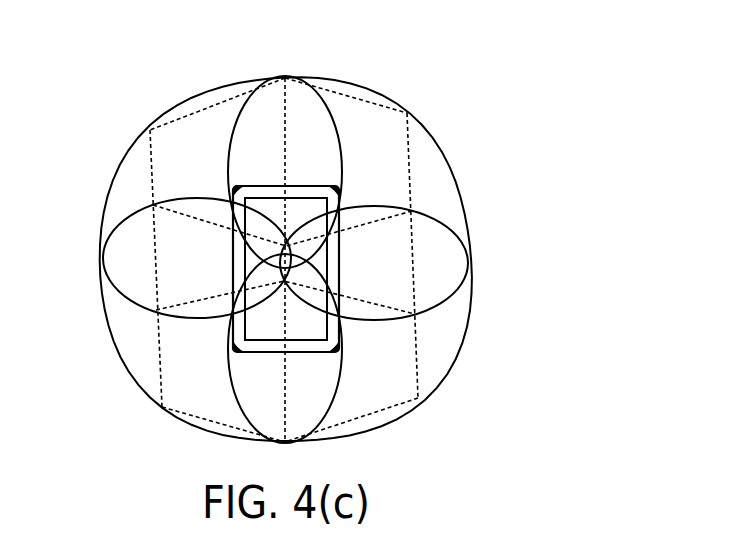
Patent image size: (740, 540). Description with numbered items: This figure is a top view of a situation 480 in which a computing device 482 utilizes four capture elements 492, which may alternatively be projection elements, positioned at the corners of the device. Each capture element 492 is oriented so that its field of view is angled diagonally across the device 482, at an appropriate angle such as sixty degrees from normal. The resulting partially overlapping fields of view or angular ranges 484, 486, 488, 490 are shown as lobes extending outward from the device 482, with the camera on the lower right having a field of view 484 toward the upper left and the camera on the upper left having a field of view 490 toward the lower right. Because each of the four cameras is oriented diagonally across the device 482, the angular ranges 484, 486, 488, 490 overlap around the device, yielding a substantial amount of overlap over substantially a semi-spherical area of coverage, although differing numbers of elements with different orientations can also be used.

The situation 480 is at (672, 89).
The computing device 482 is at (338, 253).
The field of view 484 is at (120, 168).
The field of view 486 is at (100, 312).
The field of view 488 is at (457, 175).
The field of view 490 is at (470, 323).
The capture elements 492 is at (232, 348).